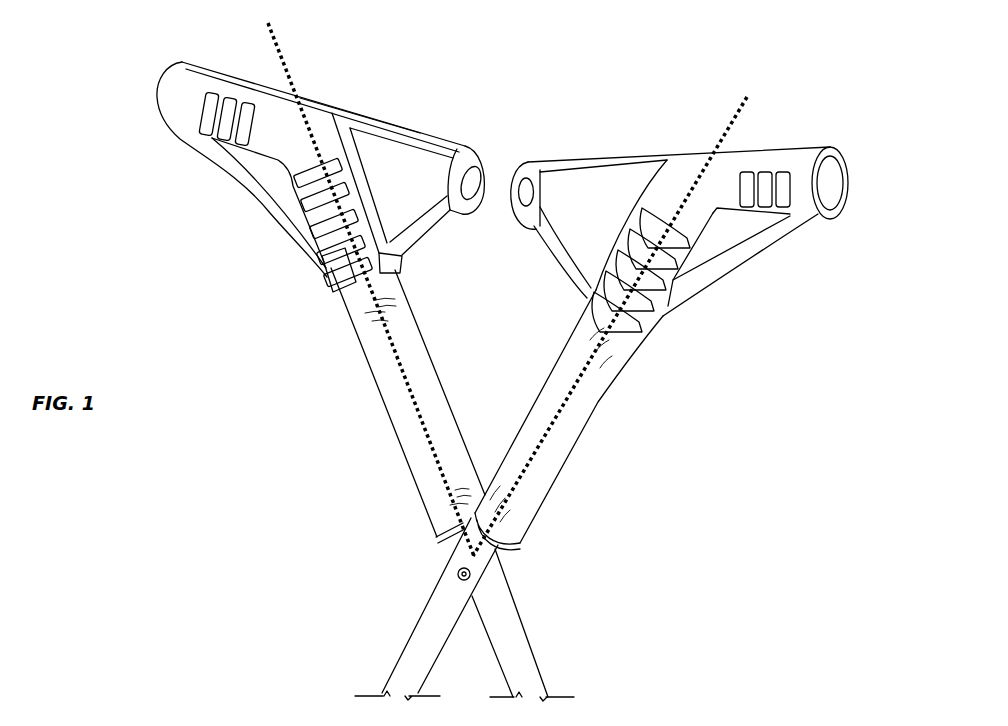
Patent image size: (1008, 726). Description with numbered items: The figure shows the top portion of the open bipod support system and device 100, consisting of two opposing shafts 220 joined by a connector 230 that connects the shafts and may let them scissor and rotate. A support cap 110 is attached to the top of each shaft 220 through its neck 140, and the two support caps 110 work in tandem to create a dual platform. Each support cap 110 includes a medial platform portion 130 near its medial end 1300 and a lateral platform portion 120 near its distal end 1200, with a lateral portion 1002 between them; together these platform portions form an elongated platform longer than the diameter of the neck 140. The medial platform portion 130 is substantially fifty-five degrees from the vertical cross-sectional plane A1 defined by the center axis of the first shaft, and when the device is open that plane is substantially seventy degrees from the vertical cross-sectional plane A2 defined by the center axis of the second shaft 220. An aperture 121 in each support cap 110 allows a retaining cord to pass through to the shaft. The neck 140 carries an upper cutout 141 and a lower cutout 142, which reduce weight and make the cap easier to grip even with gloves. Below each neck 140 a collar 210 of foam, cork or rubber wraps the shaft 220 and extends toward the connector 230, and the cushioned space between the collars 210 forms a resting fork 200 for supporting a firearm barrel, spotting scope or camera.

The open bipod support system and device 100 is at (322, 70).
The lateral portion 1002 is at (371, 85).
The support cap 110 is at (697, 295).
The lateral platform portion 120 is at (802, 141).
The aperture 121 is at (834, 186).
The medial platform portion 130 is at (598, 153).
The neck 140 is at (661, 326).
The upper cutout 141 is at (330, 262).
The lower cutout 142 is at (343, 285).
The distal end 1200 is at (866, 164).
The medial end 1300 is at (518, 140).
The resting fork 200 is at (391, 439).
The collar 210 is at (586, 445).
The shaft 220 is at (539, 629).
The connector 230 is at (457, 574).
The vertical cross-sectional plane A1 is at (306, 125).
The vertical cross-sectional plane A2 is at (697, 183).